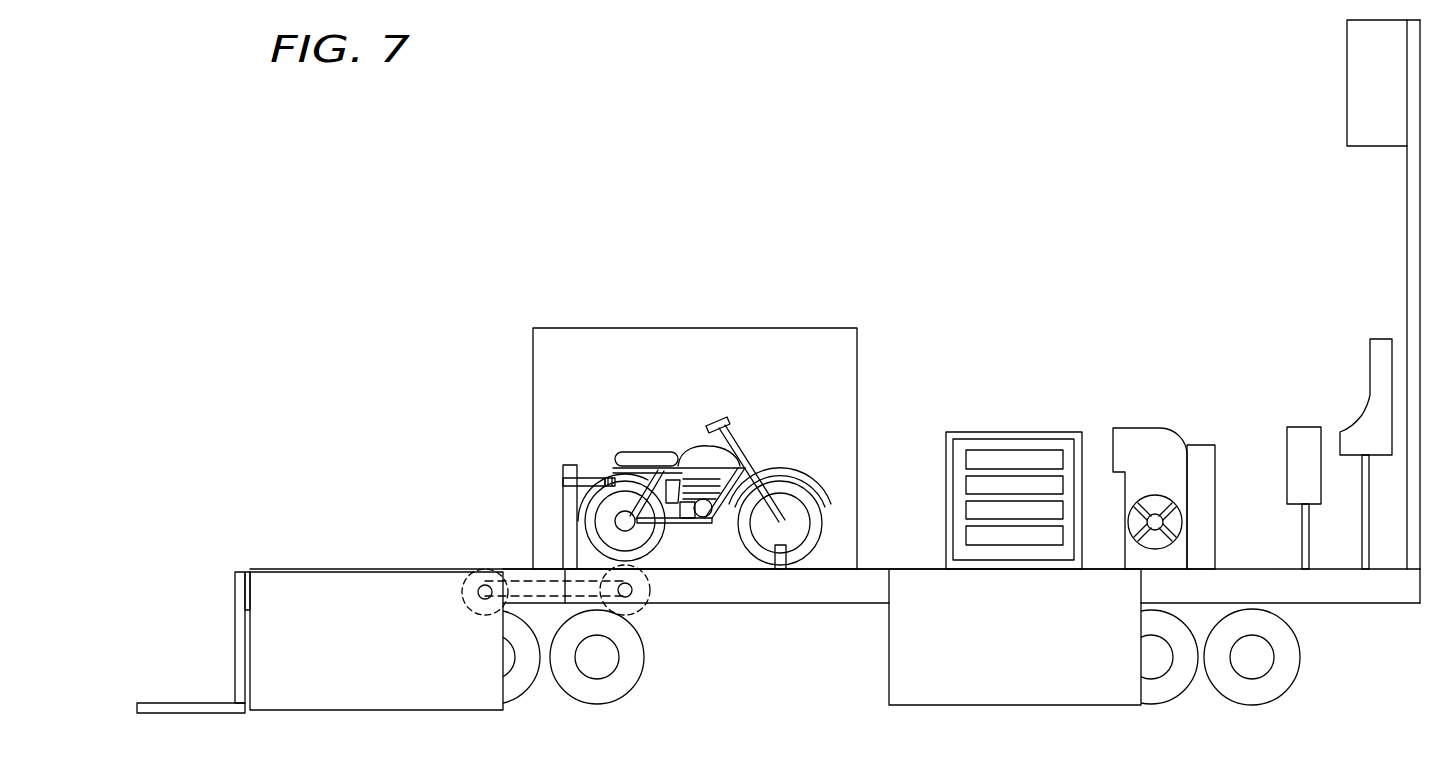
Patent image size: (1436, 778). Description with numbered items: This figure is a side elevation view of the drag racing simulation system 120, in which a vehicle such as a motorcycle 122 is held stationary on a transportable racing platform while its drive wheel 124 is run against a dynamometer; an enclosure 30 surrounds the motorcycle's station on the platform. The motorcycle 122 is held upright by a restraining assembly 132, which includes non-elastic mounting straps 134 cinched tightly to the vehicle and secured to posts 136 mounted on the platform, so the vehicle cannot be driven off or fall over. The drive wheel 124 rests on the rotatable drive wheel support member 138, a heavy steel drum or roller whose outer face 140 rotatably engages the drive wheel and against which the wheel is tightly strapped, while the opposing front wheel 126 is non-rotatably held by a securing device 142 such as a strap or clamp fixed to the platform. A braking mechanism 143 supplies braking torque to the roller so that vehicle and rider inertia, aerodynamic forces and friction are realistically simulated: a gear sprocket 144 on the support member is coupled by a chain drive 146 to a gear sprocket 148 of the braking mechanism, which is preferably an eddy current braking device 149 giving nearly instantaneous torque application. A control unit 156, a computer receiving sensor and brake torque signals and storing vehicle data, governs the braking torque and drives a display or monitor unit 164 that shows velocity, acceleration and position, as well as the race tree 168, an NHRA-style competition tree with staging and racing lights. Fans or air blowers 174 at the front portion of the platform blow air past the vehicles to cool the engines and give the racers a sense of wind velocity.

The drag racing simulation system 120 is at (452, 245).
The enclosure 30 is at (878, 370).
The motorcycle 122 is at (642, 445).
The drive wheel 124 is at (663, 527).
The front wheel 126 is at (828, 512).
The restraining assembly 132 is at (545, 479).
The non-elastic mounting straps 134 is at (586, 480).
The posts 136 is at (563, 510).
The rotatable drive wheel support member 138 is at (651, 588).
The outer face 140 is at (700, 566).
The securing device 142 is at (786, 567).
The braking mechanism 143 is at (443, 598).
The gear sprocket 144 is at (626, 591).
The chain drive 146 is at (565, 577).
The gear sprocket 148 is at (485, 593).
The eddy current braking device 149 is at (482, 568).
The control unit 156 is at (1303, 427).
The display or monitor unit 164 is at (1015, 432).
The race tree 168 is at (1347, 42).
The fans or air blowers 174 is at (1138, 428).